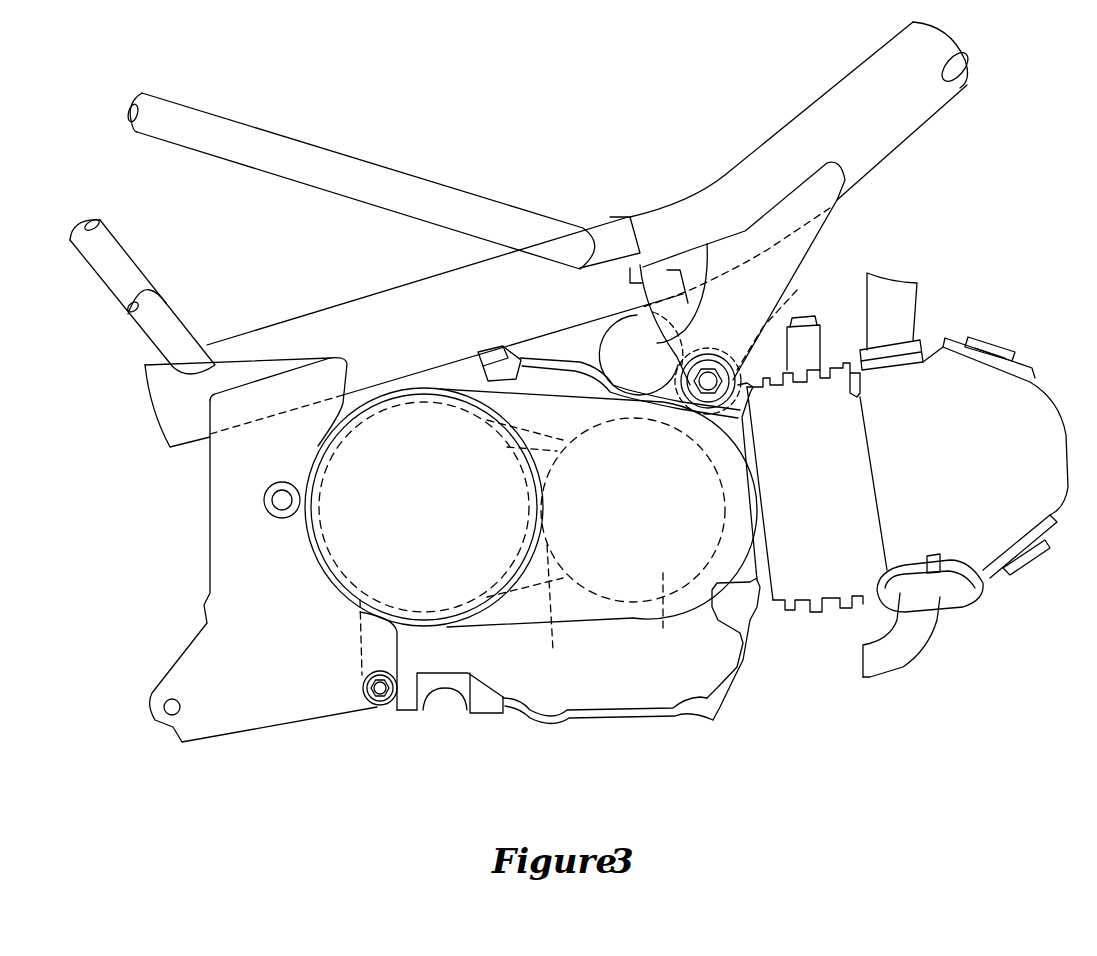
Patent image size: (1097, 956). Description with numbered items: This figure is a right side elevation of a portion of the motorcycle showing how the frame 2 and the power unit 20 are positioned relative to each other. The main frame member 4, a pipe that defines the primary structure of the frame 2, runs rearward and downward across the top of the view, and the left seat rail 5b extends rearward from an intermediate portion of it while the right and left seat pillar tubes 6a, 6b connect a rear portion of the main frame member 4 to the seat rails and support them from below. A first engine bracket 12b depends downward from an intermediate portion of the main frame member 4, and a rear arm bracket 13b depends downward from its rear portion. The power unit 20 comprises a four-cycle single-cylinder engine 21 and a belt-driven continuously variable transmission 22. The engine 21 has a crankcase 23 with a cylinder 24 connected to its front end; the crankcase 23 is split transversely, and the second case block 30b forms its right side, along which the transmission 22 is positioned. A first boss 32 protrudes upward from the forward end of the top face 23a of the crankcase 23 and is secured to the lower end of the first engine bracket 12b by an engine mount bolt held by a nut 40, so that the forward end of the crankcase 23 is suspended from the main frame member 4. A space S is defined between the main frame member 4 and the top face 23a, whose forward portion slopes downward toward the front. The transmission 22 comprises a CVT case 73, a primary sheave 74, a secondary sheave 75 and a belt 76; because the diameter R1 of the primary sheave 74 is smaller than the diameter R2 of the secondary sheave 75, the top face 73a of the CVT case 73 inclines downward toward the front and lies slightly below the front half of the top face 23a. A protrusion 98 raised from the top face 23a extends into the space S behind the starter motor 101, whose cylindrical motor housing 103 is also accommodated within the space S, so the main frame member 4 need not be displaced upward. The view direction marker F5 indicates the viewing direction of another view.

The frame 2 is at (947, 117).
The main frame member 4 is at (797, 123).
The left seat rail 5b is at (343, 167).
The right seat pillar tube 6a is at (107, 248).
The left seat pillar tube 6b is at (163, 308).
The first engine bracket 12b is at (800, 248).
The rear arm bracket 13b is at (233, 553).
The power unit 20 is at (533, 650).
The engine 21 is at (729, 692).
The belt-driven continuously variable transmission 22 is at (348, 546).
The crankcase 23 is at (650, 694).
The top face of the crankcase 23a is at (670, 413).
The cylinder 24 is at (822, 570).
The second case block 30b is at (613, 660).
The first boss 32 is at (786, 430).
The nut 40 is at (713, 363).
The CVT case 73 is at (501, 614).
The top face of the CVT case 73a is at (522, 394).
The primary sheave 74 is at (668, 621).
The secondary sheave 75 is at (353, 458).
The belt 76 is at (534, 551).
The protrusion 98 is at (543, 353).
The starter motor 101 is at (618, 343).
The motor housing 103 is at (687, 358).
The diameter of the primary sheave R1 is at (677, 434).
The diameter of the secondary sheave R2 is at (492, 425).
The viewing direction F5 is at (602, 190).
The space S is at (577, 340).